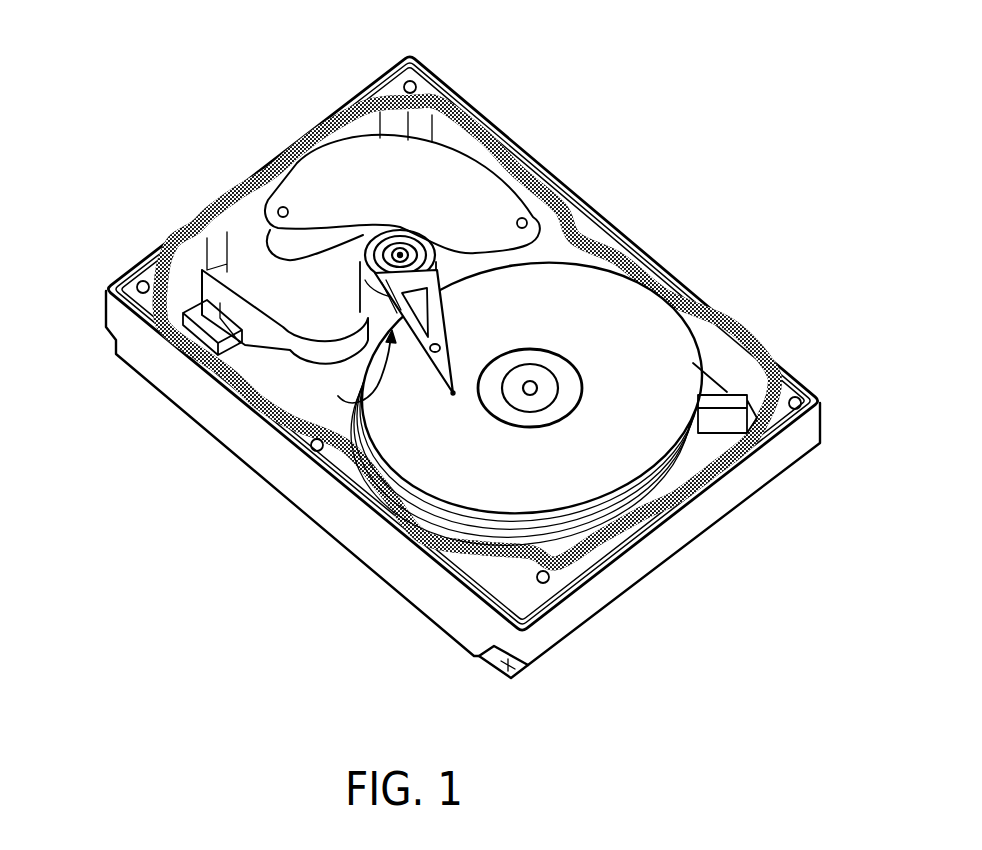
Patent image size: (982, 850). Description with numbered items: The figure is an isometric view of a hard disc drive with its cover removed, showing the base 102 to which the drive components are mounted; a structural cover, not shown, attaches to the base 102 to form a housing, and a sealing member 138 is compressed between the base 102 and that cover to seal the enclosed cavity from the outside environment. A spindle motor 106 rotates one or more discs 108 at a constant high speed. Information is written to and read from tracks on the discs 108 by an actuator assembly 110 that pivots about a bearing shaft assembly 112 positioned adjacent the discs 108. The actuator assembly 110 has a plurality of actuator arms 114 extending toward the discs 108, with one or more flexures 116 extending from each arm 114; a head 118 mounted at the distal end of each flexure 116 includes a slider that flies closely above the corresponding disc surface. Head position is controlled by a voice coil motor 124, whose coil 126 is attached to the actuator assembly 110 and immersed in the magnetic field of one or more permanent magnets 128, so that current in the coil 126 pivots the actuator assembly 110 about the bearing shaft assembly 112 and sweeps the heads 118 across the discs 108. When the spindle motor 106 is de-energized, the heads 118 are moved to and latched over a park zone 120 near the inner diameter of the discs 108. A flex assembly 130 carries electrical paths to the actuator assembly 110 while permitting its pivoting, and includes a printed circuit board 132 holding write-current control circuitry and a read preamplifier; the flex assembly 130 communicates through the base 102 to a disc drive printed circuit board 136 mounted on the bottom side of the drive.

The base 102 is at (230, 411).
The spindle motor 106 is at (530, 388).
The discs 108 is at (635, 335).
The actuator assembly 110 is at (348, 366).
The bearing shaft assembly 112 is at (402, 257).
The actuator arms 114 is at (447, 307).
The flexures 116 is at (437, 375).
The head 118 is at (455, 393).
The park zone 120 is at (541, 428).
The voice coil motor 124 is at (338, 183).
The coil 126 is at (402, 257).
The permanent magnets 128 is at (468, 183).
The flex assembly 130 is at (277, 333).
The printed circuit board 132 is at (207, 333).
The disc drive printed circuit board 136 is at (528, 665).
The sealing member 138 is at (764, 364).